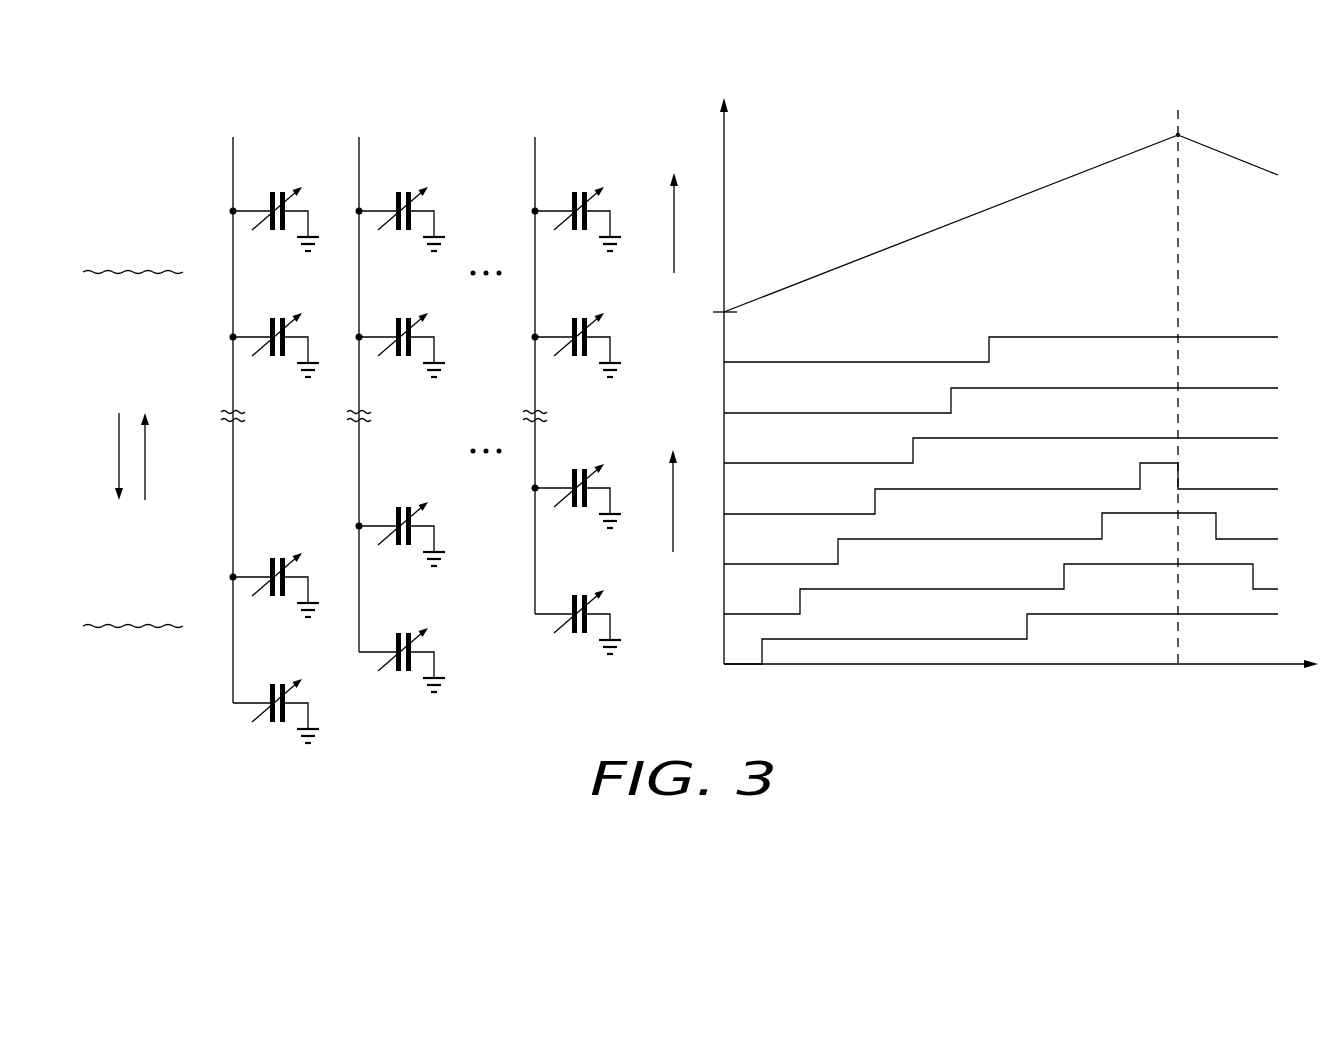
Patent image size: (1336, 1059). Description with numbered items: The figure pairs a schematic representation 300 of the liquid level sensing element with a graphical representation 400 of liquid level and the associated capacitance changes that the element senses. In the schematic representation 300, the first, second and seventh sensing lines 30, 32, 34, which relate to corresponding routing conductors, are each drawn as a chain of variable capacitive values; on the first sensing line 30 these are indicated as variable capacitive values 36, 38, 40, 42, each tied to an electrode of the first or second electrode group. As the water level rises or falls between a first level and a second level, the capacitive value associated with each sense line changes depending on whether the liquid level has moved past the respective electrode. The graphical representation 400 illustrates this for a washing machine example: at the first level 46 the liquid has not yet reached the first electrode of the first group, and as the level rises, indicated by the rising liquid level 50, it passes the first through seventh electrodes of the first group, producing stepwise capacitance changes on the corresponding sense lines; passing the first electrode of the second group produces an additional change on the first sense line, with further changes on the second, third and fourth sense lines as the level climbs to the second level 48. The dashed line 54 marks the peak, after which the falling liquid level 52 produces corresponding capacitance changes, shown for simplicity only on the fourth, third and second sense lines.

The schematic representation 300 is at (187, 76).
The graphical representation 400 is at (829, 76).
The sensing line 30 is at (231, 166).
The sensing line 32 is at (357, 166).
The sensing line 34 is at (533, 166).
The variable capacitive value 36 is at (283, 725).
The variable capacitive value 38 is at (283, 600).
The variable capacitive value 40 is at (283, 358).
The variable capacitive value 42 is at (283, 232).
The first level 46 is at (720, 310).
The second level 48 is at (1182, 135).
The rising liquid level 50 is at (1012, 200).
The falling liquid level 52 is at (1246, 162).
The dashed line 54 is at (1180, 265).